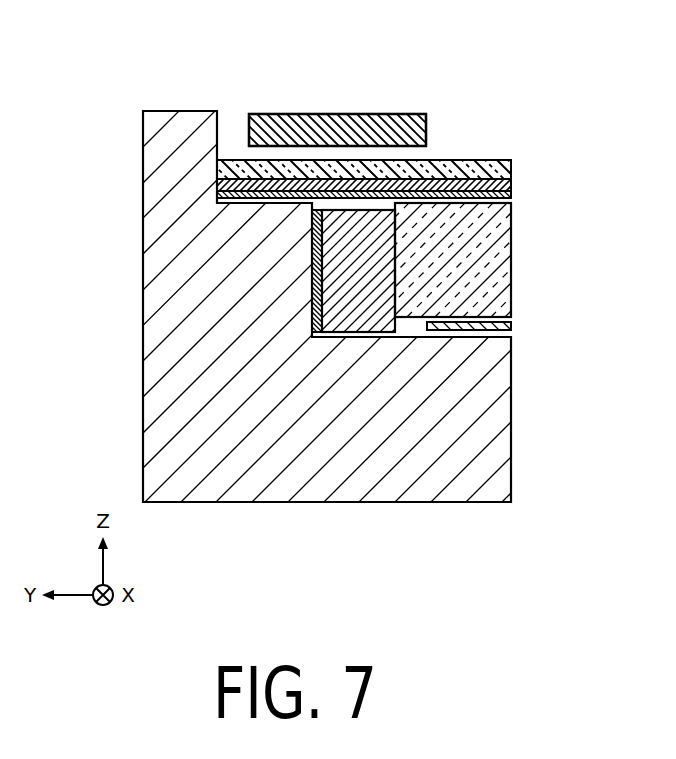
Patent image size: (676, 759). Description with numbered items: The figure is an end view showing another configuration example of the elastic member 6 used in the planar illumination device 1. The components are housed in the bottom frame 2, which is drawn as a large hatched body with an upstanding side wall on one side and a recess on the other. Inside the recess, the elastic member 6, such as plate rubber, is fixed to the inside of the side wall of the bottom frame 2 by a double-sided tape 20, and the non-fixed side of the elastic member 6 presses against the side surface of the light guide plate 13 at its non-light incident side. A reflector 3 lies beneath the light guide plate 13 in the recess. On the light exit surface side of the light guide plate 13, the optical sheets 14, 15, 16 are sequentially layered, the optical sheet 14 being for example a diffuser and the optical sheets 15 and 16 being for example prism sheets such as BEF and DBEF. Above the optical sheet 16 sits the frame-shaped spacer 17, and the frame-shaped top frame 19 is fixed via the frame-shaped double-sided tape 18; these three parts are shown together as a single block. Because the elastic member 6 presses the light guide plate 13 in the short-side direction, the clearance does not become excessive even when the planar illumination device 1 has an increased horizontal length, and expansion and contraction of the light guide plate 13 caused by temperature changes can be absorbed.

The planar illumination device 1 is at (128, 86).
The bottom frame 2 is at (143, 300).
The reflector 3 is at (511, 328).
The elastic member 6 is at (362, 334).
The light guide plate 13 is at (503, 256).
The optical sheet 14 is at (511, 195).
The optical sheet 15 is at (511, 184).
The optical sheet 16 is at (511, 162).
The spacer 17 is at (330, 116).
The double-sided tape 18 is at (337, 130).
The top frame 19 is at (337, 130).
The double-sided tape 20 is at (315, 337).